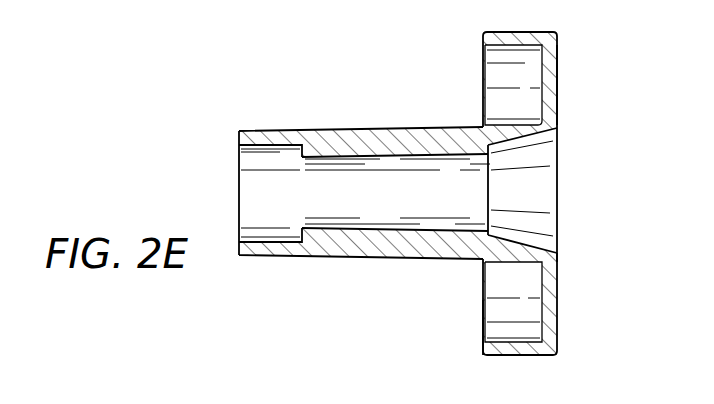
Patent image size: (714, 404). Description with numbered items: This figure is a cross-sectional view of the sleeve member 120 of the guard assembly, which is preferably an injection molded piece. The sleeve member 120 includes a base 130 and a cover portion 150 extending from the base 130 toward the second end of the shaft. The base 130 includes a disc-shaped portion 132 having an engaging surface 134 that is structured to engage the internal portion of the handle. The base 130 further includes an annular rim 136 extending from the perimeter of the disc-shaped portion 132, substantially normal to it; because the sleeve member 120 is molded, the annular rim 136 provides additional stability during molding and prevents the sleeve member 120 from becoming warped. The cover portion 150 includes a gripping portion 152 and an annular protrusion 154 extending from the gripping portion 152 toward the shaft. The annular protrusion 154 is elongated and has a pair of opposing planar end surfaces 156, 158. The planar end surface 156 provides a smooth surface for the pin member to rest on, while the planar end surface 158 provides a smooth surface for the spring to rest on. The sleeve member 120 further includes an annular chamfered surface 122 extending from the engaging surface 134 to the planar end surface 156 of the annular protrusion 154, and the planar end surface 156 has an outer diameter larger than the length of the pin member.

The sleeve member 120 is at (650, 174).
The annular chamfered surface 122 is at (525, 250).
The base 130 is at (530, 364).
The disc-shaped portion 132 is at (560, 31).
The engaging surface 134 is at (557, 82).
The annular rim 136 is at (494, 362).
The cover portion 150 is at (309, 273).
The gripping portion 152 is at (381, 258).
The annular protrusion 154 is at (390, 162).
The planar end surface 156 is at (500, 235).
The planar end surface 158 is at (300, 147).